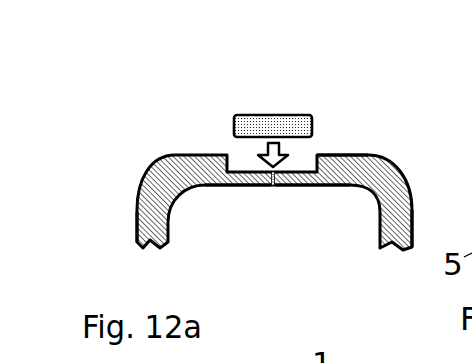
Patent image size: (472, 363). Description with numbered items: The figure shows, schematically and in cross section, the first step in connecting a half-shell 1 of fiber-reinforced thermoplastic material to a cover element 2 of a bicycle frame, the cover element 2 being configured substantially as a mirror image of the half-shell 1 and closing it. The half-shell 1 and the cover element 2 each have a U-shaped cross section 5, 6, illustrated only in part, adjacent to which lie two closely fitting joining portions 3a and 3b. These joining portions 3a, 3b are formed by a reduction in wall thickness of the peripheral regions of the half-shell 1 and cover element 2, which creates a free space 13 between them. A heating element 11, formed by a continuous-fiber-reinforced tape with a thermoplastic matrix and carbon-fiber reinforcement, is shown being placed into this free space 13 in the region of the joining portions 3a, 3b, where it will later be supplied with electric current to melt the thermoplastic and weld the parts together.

The half-shell 1 is at (143, 175).
The cover element 2 is at (378, 176).
The joining portion 3a is at (247, 186).
The joining portion 3b is at (298, 186).
The U-shaped cross section 5 is at (112, 230).
The U-shaped cross section 6 is at (429, 213).
The heating element 11 is at (275, 122).
The free space 13 is at (304, 152).